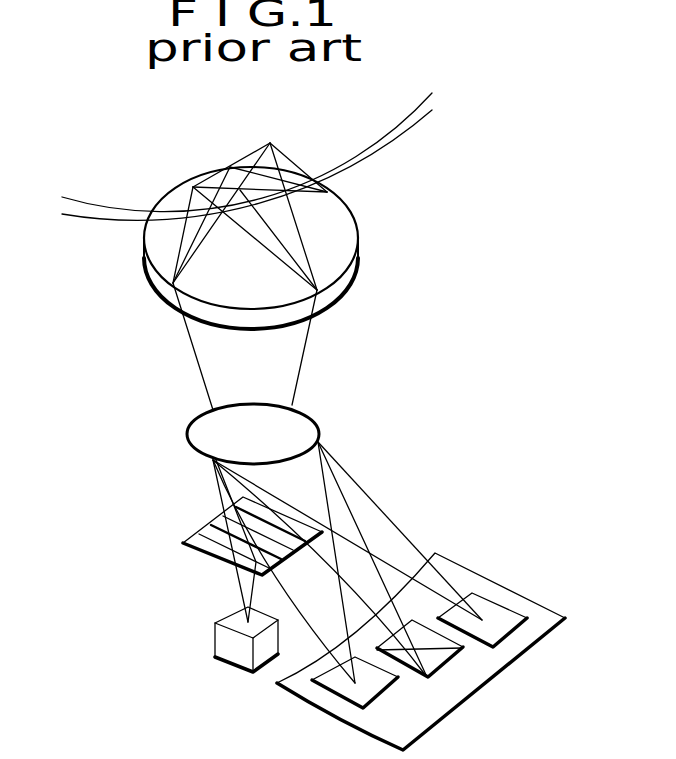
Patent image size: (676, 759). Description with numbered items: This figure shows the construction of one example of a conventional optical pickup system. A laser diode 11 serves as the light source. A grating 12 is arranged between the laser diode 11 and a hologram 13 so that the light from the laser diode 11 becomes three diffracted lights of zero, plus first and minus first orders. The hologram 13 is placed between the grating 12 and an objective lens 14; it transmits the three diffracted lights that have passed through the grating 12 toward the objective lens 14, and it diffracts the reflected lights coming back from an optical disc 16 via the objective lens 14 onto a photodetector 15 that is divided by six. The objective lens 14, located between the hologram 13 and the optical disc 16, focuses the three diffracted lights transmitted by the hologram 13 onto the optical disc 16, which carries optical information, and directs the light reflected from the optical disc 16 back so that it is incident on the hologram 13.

The laser diode 11 is at (227, 642).
The grating 12 is at (200, 527).
The hologram 13 is at (202, 433).
The objective lens 14 is at (162, 232).
The photodetector 15 is at (485, 590).
The optical disc 16 is at (378, 105).